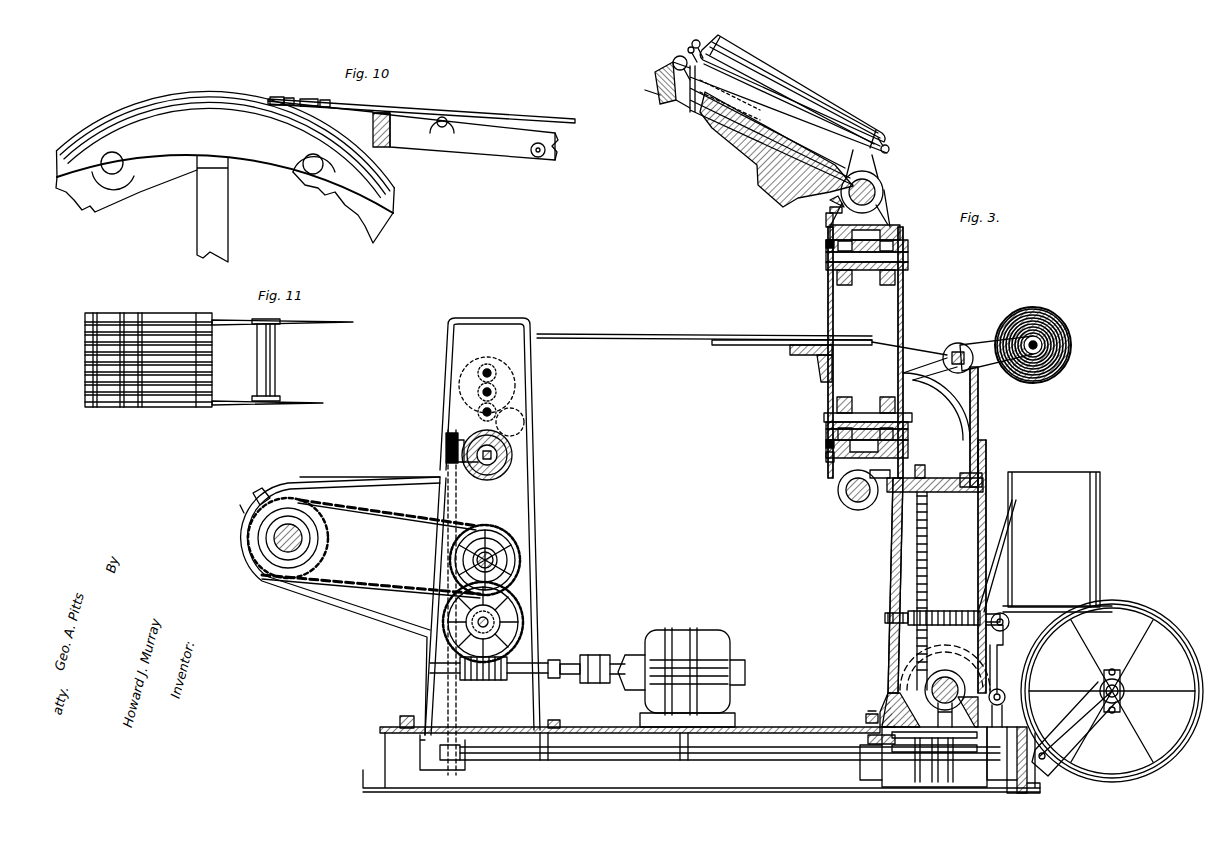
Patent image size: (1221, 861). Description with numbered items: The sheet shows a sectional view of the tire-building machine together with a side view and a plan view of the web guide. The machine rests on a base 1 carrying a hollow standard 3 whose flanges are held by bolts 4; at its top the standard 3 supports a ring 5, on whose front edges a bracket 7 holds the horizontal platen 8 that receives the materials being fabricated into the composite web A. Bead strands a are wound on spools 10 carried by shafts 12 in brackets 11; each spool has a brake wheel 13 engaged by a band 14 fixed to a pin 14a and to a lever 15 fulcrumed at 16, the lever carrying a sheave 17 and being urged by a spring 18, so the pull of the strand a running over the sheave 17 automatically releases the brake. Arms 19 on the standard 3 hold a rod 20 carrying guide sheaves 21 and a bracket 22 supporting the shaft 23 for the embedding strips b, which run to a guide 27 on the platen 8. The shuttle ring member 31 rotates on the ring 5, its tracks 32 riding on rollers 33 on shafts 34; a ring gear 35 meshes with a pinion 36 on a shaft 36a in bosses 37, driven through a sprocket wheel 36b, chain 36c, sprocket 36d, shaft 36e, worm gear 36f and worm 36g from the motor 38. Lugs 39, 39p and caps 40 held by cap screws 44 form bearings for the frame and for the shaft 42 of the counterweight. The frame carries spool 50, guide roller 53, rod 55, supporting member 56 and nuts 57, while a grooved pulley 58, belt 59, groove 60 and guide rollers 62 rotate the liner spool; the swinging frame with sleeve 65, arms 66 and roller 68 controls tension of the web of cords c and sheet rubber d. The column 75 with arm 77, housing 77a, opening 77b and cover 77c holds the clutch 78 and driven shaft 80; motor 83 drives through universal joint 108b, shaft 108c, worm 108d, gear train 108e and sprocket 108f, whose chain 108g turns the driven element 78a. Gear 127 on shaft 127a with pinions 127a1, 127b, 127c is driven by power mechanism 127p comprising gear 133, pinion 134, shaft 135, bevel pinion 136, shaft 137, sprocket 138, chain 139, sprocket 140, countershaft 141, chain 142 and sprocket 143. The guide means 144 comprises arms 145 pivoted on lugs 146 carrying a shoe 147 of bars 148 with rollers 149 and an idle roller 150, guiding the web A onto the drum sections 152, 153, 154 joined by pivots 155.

In FIG. 3, the base 1 is at (790, 727).
In FIG. 3, the standard 3 is at (893, 648).
In FIG. 3, the bolts 4 is at (866, 708).
In FIG. 3, the ring 5 is at (826, 256).
In FIG. 3, the bracket 7 is at (817, 378).
In FIG. 3, the platen 8 is at (628, 333).
In FIG. 3, the spool 10 is at (1135, 600).
In FIG. 3, the brackets 11 is at (1090, 718).
In FIG. 3, the shafts 12 is at (1124, 688).
In FIG. 3, the brake wheel 13 is at (1132, 598).
In FIG. 3, the band 14 is at (1046, 608).
In FIG. 3, the pin 14a is at (1074, 729).
In FIG. 3, the lever 15 is at (990, 645).
In FIG. 3, the fulcrum 16 is at (1006, 698).
In FIG. 3, the guide wheel or sheave 17 is at (1009, 624).
In FIG. 3, the spring 18 is at (955, 600).
In FIG. 3, the arms 19 is at (940, 372).
In FIG. 3, the rod 20 is at (958, 343).
In FIG. 3, the guide sheaves 21 is at (972, 348).
In FIG. 3, the bracket 22 is at (980, 352).
In FIG. 3, the shaft 23 is at (1058, 370).
In FIG. 3, the guide 27 is at (752, 345).
In FIG. 3, the ring member 31 is at (908, 235).
In FIG. 3, the tracks 32 is at (838, 244).
In FIG. 3, the rollers 33 is at (837, 282).
In FIG. 3, the shafts 34 is at (826, 262).
In FIG. 3, the ring gear 35 is at (890, 225).
In FIG. 3, the pinion 36 is at (893, 500).
In FIG. 3, the shaft 36a is at (915, 635).
In FIG. 3, the sprocket wheel 36b is at (925, 478).
In FIG. 3, the sprocket chain 36c is at (945, 575).
In FIG. 3, the sprocket 36d is at (866, 774).
In FIG. 3, the shaft 36e is at (1004, 742).
In FIG. 3, the worm gear 36f is at (1003, 764).
In FIG. 3, the worm 36g is at (930, 698).
In FIG. 3, the bosses 37 is at (922, 462).
In FIG. 3, the motor 38 is at (935, 660).
In FIG. 3, the lugs 39 is at (886, 205).
In FIG. 3, the lugs 39p is at (840, 476).
In FIG. 3, the caps 40 is at (875, 192).
In FIG. 3, the shaft 42 is at (856, 494).
In FIG. 3, the cap screws 44 is at (882, 190).
In FIG. 3, the spool 50 is at (705, 118).
In FIG. 3, the guide roller 53 is at (672, 102).
In FIG. 3, the rod 55 is at (690, 47).
In FIG. 3, the supporting member 56 is at (678, 56).
In FIG. 3, the nuts 57 is at (890, 150).
In FIG. 3, the grooved pulley 58 is at (830, 201).
In FIG. 3, the band or belt 59 is at (826, 222).
In FIG. 3, the groove 60 is at (826, 244).
In FIG. 3, the guide rollers 62 is at (830, 212).
In FIG. 3, the sleeve 65 is at (782, 72).
In FIG. 3, the depending arms 66 is at (792, 92).
In FIG. 3, the roller 68 is at (808, 120).
In FIG. 3, the column 75 is at (540, 590).
In FIG. 3, the arm 77 is at (352, 618).
In FIG. 3, the housing 77a is at (300, 480).
In FIG. 3, the opening 77b is at (244, 490).
In FIG. 3, the cover 77c is at (238, 510).
In FIG. 3, the friction clutch mechanism 78 is at (326, 544).
In FIG. 3, the driven element 78a is at (318, 560).
In FIG. 3, the driven shaft 80 is at (300, 535).
In FIG. 3, the motor 83 is at (672, 630).
In FIG. 3, the universal joint 108b is at (604, 642).
In FIG. 3, the shaft 108c is at (566, 660).
In FIG. 3, the worm 108d is at (489, 677).
In FIG. 3, the gear train 108e is at (515, 605).
In FIG. 3, the sprocket 108f is at (500, 530).
In FIG. 3, the chain 108g is at (402, 592).
In FIG. 3, the gear 127 is at (512, 375).
In FIG. 3, the shaft 127a is at (478, 393).
In FIG. 3, the pinion 127a1 is at (496, 392).
In FIG. 3, the pinion 127b is at (500, 350).
In FIG. 3, the pinion 127c is at (496, 412).
In FIG. 3, the power mechanism 127p is at (500, 475).
In FIG. 3, the gear 133 is at (514, 448).
In FIG. 3, the pinion 134 is at (512, 460).
In FIG. 3, the shaft 135 is at (510, 468).
In FIG. 3, the bevel pinion 136 is at (466, 432).
In FIG. 3, the shaft 137 is at (474, 478).
In FIG. 3, the sprocket 138 is at (446, 445).
In FIG. 3, the chain 139 is at (448, 505).
In FIG. 3, the sprocket 140 is at (468, 770).
In FIG. 3, the countershaft 141 is at (575, 762).
In FIG. 3, the chain 142 is at (886, 700).
In FIG. 3, the sprocket 143 is at (915, 770).
In FIG. 10, the guide means 144 is at (464, 137).
In FIG. 11, the guide means 144 is at (148, 371).
In FIG. 10, the arms 145 is at (500, 120).
In FIG. 11, the arms 145 is at (300, 326).
In FIG. 10, the lugs 146 is at (548, 158).
In FIG. 10, the shoe 147 is at (300, 108).
In FIG. 10, the parallel bars 148 is at (324, 100).
In FIG. 11, the parallel bars 148 is at (140, 316).
In FIG. 10, the rollers 149 is at (280, 98).
In FIG. 11, the rollers 149 is at (126, 305).
In FIG. 10, the idle roller 150 is at (456, 124).
In FIG. 11, the idle roller 150 is at (277, 364).
In FIG. 10, the curved section 152 is at (96, 210).
In FIG. 10, the curved section 153 is at (340, 226).
In FIG. 10, the curved section 154 is at (155, 168).
In FIG. 10, the pivot 155 is at (123, 163).
In FIG. 3, the bead strands a is at (928, 348).
In FIG. 3, the embedding strips b is at (988, 384).
In FIG. 3, the cords c is at (770, 184).
In FIG. 3, the sheet rubber d is at (778, 196).
In FIG. 10, the composite web A is at (429, 95).